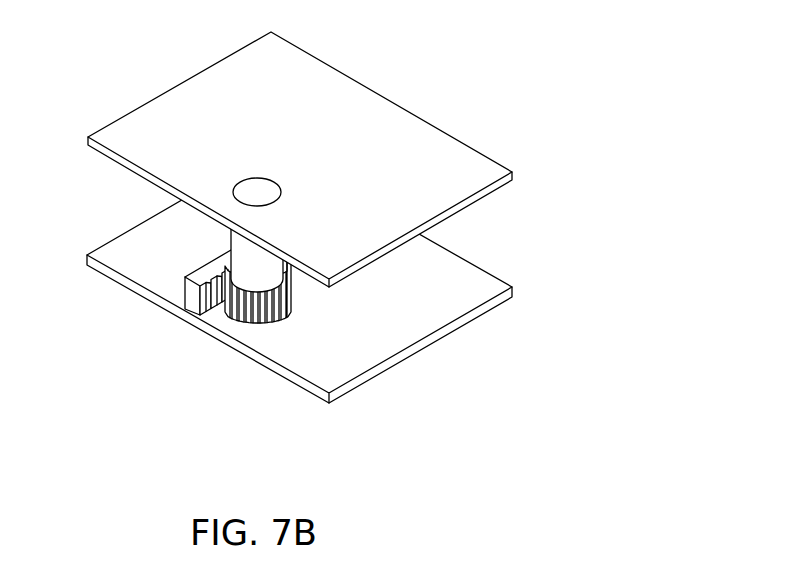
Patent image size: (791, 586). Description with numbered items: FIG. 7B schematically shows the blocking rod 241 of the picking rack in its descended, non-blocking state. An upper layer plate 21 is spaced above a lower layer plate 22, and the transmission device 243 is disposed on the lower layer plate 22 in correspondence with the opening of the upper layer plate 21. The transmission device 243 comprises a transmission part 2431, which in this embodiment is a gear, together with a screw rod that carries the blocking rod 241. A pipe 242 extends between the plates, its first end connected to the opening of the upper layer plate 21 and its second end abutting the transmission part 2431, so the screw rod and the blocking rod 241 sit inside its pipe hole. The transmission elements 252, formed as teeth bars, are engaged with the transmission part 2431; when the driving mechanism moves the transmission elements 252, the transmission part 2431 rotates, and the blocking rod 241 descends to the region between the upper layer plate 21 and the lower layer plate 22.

The upper layer plate 21 is at (458, 155).
The lower layer plate 22 is at (458, 288).
The blocking rod 241 is at (261, 187).
The pipe 242 is at (242, 248).
The transmission device 243 is at (292, 302).
The transmission part 2431 is at (233, 308).
The transmission elements 252 is at (205, 272).